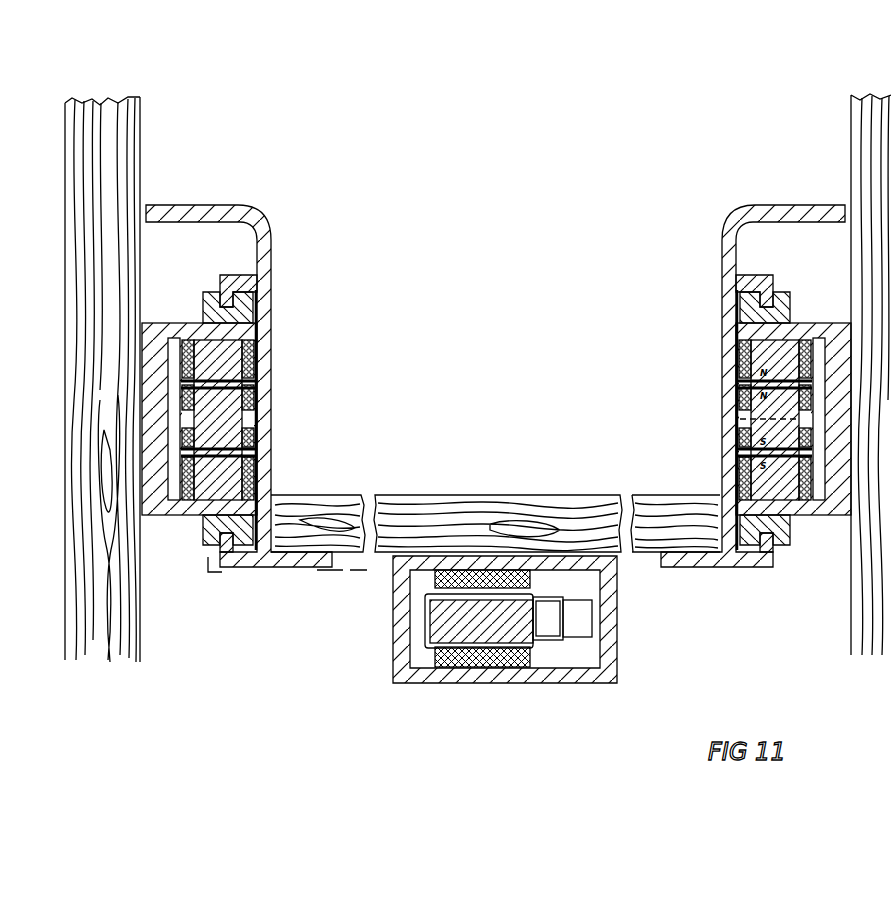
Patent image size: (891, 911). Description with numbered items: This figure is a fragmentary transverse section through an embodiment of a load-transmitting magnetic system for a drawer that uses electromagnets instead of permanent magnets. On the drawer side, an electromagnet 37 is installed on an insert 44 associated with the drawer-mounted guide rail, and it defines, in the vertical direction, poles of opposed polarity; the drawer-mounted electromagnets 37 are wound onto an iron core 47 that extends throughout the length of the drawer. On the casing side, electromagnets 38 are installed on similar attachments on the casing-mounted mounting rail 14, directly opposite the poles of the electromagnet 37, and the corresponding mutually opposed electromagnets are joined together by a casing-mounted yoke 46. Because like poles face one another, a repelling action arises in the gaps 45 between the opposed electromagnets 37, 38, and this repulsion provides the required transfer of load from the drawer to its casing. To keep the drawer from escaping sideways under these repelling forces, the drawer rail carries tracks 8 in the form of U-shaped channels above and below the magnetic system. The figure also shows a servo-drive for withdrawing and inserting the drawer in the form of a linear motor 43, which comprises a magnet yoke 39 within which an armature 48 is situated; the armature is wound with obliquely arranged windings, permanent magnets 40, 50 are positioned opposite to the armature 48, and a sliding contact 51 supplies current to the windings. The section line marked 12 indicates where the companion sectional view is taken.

The track 8 is at (725, 318).
The section line for FIG. 12 is at (207, 157).
The mounting rail 14 is at (840, 338).
The electromagnet 37 is at (745, 403).
The electromagnets 38 is at (745, 352).
The magnet yoke 39 is at (610, 614).
The permanent magnet 40 is at (515, 660).
The linear motor 43 is at (662, 653).
The insert 44 is at (742, 420).
The gaps 45 is at (742, 382).
The yoke 46 is at (160, 490).
The iron core 47 is at (225, 420).
The armature 48 is at (445, 618).
The permanent magnet 50 is at (512, 570).
The sliding contact 51 is at (578, 622).